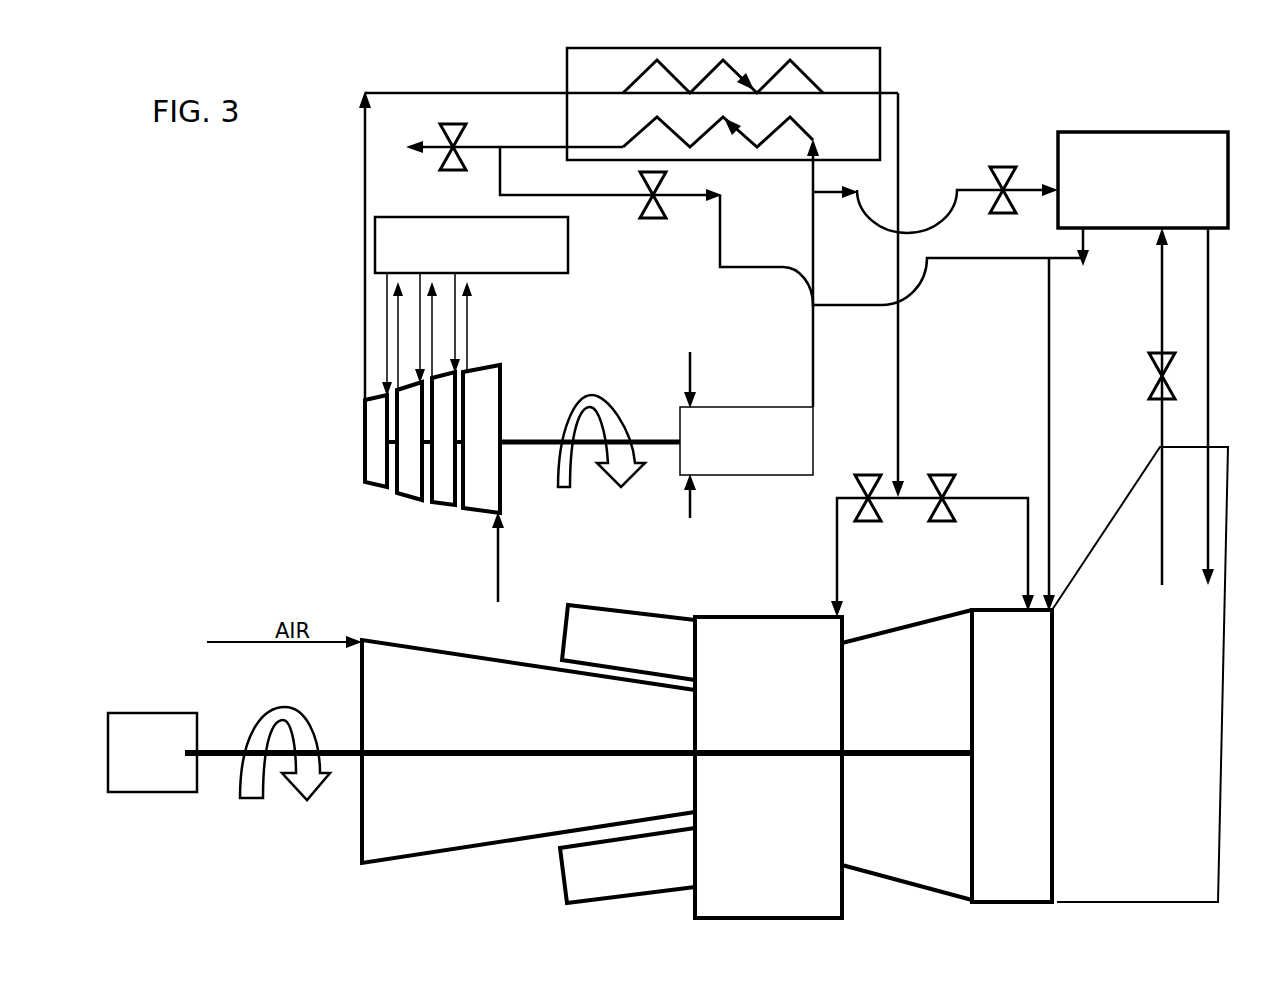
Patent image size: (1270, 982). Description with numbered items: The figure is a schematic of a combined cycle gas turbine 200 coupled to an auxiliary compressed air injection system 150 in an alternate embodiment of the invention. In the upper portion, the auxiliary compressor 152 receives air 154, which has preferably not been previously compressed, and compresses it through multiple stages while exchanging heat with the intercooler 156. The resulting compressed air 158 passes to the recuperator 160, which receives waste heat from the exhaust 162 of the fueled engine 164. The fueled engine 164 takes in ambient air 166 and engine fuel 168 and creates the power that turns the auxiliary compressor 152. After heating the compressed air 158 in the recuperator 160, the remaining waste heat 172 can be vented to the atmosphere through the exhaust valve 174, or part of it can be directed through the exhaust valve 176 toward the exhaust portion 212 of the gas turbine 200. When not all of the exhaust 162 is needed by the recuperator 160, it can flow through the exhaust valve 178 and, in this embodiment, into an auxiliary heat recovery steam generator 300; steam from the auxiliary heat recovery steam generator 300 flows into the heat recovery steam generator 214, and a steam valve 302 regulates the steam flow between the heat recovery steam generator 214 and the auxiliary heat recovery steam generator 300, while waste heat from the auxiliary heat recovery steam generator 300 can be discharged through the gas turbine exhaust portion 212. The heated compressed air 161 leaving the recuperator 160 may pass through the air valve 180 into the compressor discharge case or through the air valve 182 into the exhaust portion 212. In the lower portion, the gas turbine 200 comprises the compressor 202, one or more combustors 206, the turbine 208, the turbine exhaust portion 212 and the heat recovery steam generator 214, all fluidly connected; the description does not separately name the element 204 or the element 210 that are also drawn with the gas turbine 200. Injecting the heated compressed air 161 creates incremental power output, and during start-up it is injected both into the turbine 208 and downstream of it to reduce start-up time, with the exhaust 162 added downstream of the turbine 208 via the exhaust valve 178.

The auxiliary compressed air injection system 150 is at (318, 304).
The auxiliary compressor 152 is at (363, 438).
The air 154 is at (470, 557).
The intercooler 156 is at (471, 306).
The compressed air 158 is at (628, 229).
The recuperator 160 is at (802, 47).
The heated compressed air 161 is at (878, 295).
The exhaust 162 is at (791, 273).
The fueled engine 164 is at (746, 441).
The ambient air 166 is at (662, 502).
The engine fuel 168 is at (677, 362).
The remaining waste heat 172 is at (744, 213).
The exhaust valve 174 is at (443, 137).
The exhaust valve 176 is at (655, 212).
The exhaust valve 178 is at (935, 182).
The air valve 180 is at (932, 546).
The air valve 182 is at (945, 512).
The gas turbine 200 is at (302, 854).
The compressor 202 is at (528, 751).
The lower inlet duct 204 is at (556, 887).
The combustors 206 is at (628, 642).
The turbine 208 is at (907, 755).
The generator 210 is at (219, 753).
The exhaust portion 212 is at (1012, 756).
The heat recovery steam generator 214 is at (1140, 565).
The auxiliary heat recovery steam generator 300 is at (1135, 371).
The steam valve 302 is at (1140, 406).